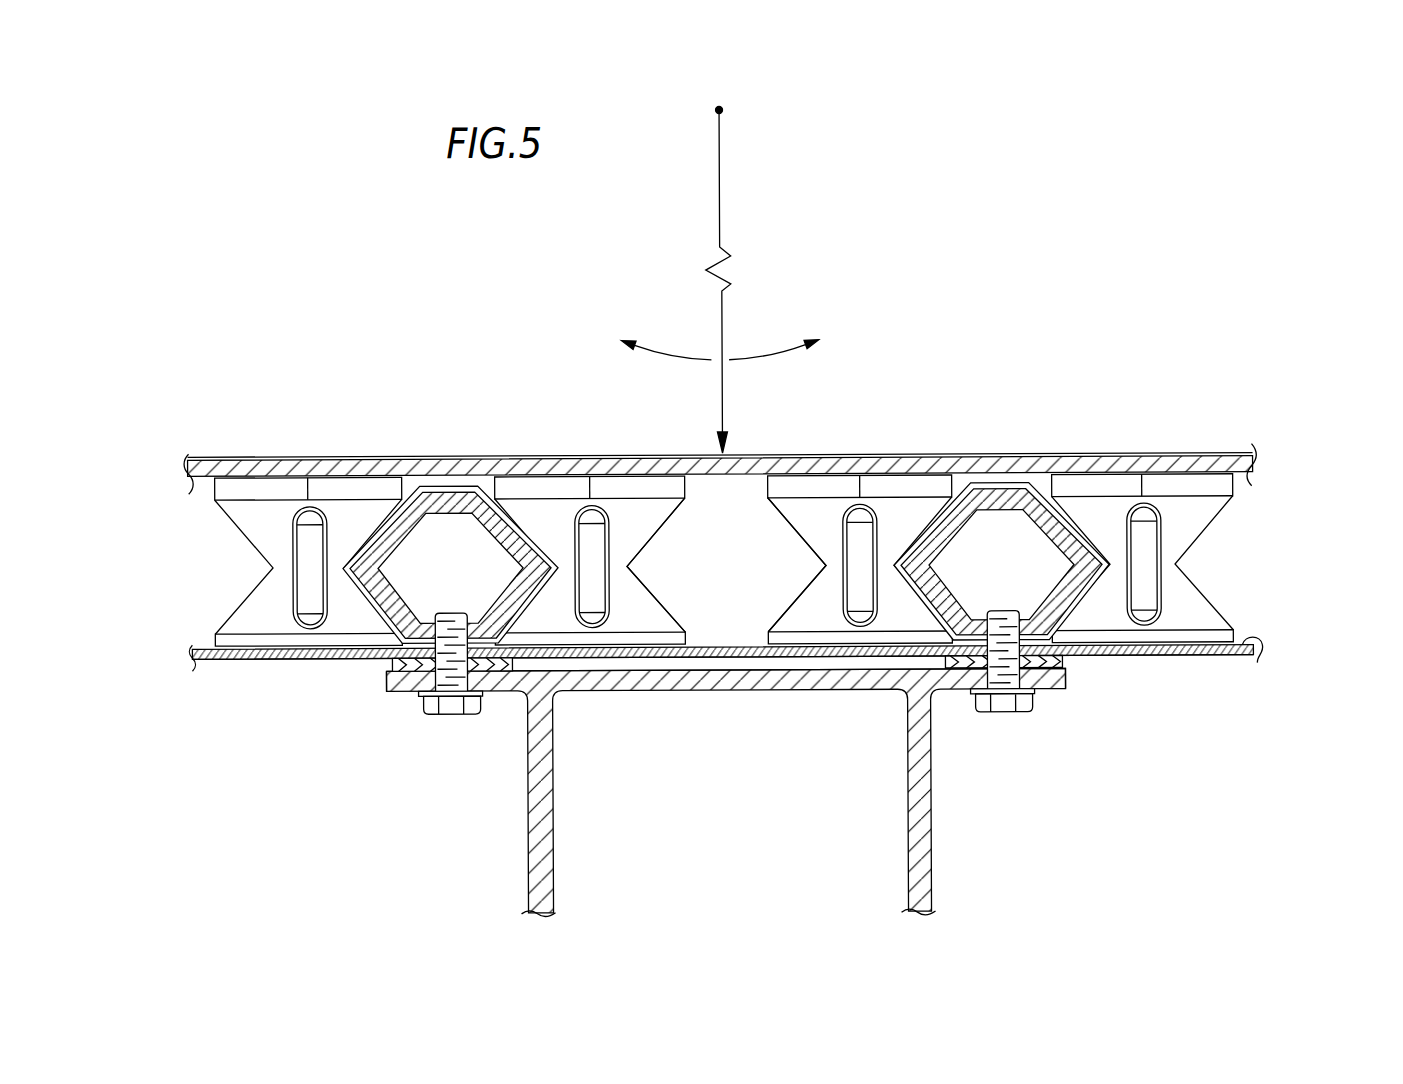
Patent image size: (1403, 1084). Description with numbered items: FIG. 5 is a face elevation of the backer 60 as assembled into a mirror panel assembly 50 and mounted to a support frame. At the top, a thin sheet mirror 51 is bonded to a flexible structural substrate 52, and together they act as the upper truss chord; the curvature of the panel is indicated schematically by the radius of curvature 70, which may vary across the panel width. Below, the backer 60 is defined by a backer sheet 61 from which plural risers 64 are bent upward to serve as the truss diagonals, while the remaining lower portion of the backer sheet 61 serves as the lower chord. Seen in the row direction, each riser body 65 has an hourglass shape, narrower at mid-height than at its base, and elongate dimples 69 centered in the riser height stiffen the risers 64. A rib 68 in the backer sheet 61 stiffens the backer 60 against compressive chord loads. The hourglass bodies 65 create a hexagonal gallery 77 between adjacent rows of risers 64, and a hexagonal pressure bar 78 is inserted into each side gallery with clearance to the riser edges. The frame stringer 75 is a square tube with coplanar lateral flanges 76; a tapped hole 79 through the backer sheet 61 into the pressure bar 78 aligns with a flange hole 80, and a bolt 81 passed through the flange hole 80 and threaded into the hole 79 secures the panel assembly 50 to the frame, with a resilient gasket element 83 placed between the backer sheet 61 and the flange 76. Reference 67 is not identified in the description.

The panel assembly 50 is at (743, 569).
The thin sheet mirror 51 is at (930, 460).
The structural substrate 52 is at (1150, 458).
The backer 60 is at (232, 669).
The backer sheet 61 is at (1197, 657).
The riser 64 is at (230, 541).
The riser body 65 is at (256, 612).
The flange 67 is at (258, 465).
The rib 68 is at (1257, 665).
The dimple 69 is at (327, 542).
The radius of curvature 70 is at (721, 180).
The frame stringer 75 is at (488, 833).
The lateral flange 76 is at (387, 687).
The gallery 77 is at (731, 495).
The pressure bar 78 is at (458, 485).
The tapped hole 79 is at (440, 620).
The flange hole 80 is at (460, 695).
The bolt 81 is at (423, 703).
The gasket element 83 is at (393, 662).